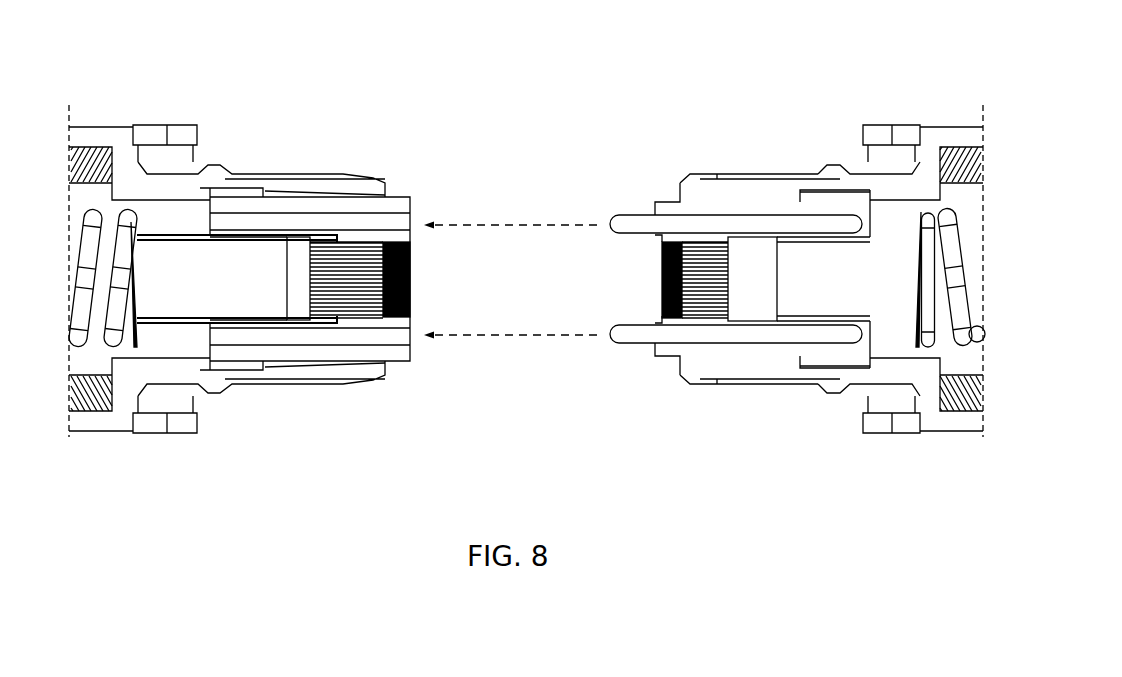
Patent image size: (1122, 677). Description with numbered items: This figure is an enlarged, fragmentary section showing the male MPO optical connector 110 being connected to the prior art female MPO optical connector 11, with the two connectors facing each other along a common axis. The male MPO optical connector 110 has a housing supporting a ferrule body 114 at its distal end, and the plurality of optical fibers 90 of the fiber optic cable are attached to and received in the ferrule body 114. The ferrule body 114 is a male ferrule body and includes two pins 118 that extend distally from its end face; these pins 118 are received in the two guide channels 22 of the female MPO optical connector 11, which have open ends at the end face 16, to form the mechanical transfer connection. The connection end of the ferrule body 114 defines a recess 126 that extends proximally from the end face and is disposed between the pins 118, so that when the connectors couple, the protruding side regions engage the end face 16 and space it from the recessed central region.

The female MPO optical connector 11 is at (227, 97).
The MPO optical connector 110 is at (776, 120).
The guide channels 22 is at (396, 222).
The end face 16 is at (423, 274).
The ferrule body 114 is at (655, 177).
The pins 118 is at (620, 222).
The recess 126 is at (650, 270).
The optical fibers 90 is at (684, 328).